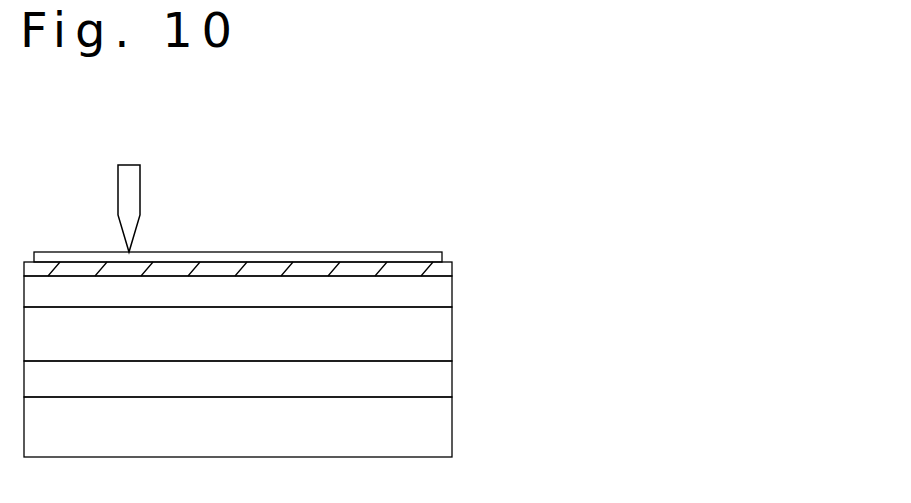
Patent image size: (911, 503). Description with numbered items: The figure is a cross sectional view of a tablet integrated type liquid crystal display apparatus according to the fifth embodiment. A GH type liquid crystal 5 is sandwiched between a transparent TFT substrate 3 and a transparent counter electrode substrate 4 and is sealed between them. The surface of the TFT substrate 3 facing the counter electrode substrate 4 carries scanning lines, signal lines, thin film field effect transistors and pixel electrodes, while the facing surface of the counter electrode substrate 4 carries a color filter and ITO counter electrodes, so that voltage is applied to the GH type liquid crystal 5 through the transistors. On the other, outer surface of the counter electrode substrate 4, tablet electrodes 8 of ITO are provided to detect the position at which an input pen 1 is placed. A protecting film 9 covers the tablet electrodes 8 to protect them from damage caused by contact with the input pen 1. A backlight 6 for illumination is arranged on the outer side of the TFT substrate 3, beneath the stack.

The input pen 1 is at (140, 191).
The protecting film 9 is at (350, 251).
The tablet electrodes 8 is at (453, 265).
The counter electrode substrate 4 is at (453, 285).
The GH type liquid crystal 5 is at (453, 331).
The TFT substrate 3 is at (453, 375).
The backlight 6 is at (453, 424).